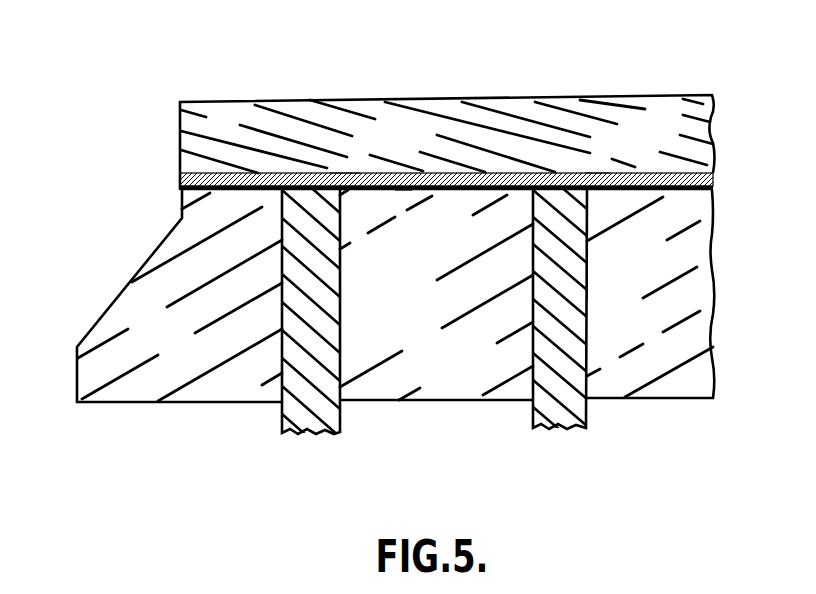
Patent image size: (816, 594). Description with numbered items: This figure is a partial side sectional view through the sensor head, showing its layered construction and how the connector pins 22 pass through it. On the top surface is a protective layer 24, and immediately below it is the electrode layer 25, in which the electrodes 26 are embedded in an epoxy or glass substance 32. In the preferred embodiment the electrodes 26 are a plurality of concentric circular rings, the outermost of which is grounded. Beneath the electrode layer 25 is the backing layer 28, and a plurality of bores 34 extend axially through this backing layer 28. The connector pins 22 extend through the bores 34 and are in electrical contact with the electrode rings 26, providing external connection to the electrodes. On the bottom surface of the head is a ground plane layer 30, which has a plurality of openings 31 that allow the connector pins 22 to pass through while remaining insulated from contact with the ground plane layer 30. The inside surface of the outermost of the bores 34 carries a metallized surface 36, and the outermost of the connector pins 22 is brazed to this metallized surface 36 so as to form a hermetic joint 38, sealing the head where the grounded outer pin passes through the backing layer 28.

The connector pins 22 is at (281, 432).
The protective layer 24 is at (217, 128).
The electrode layer 25 is at (180, 188).
The electrodes 26 is at (343, 180).
The backing layer 28 is at (175, 343).
The ground plane layer 30 is at (420, 393).
The openings 31 is at (604, 398).
The epoxy or glass substance 32 is at (403, 190).
The bores 34 is at (340, 217).
The metallized surface 36 is at (341, 297).
The hermetic joint 38 is at (341, 365).